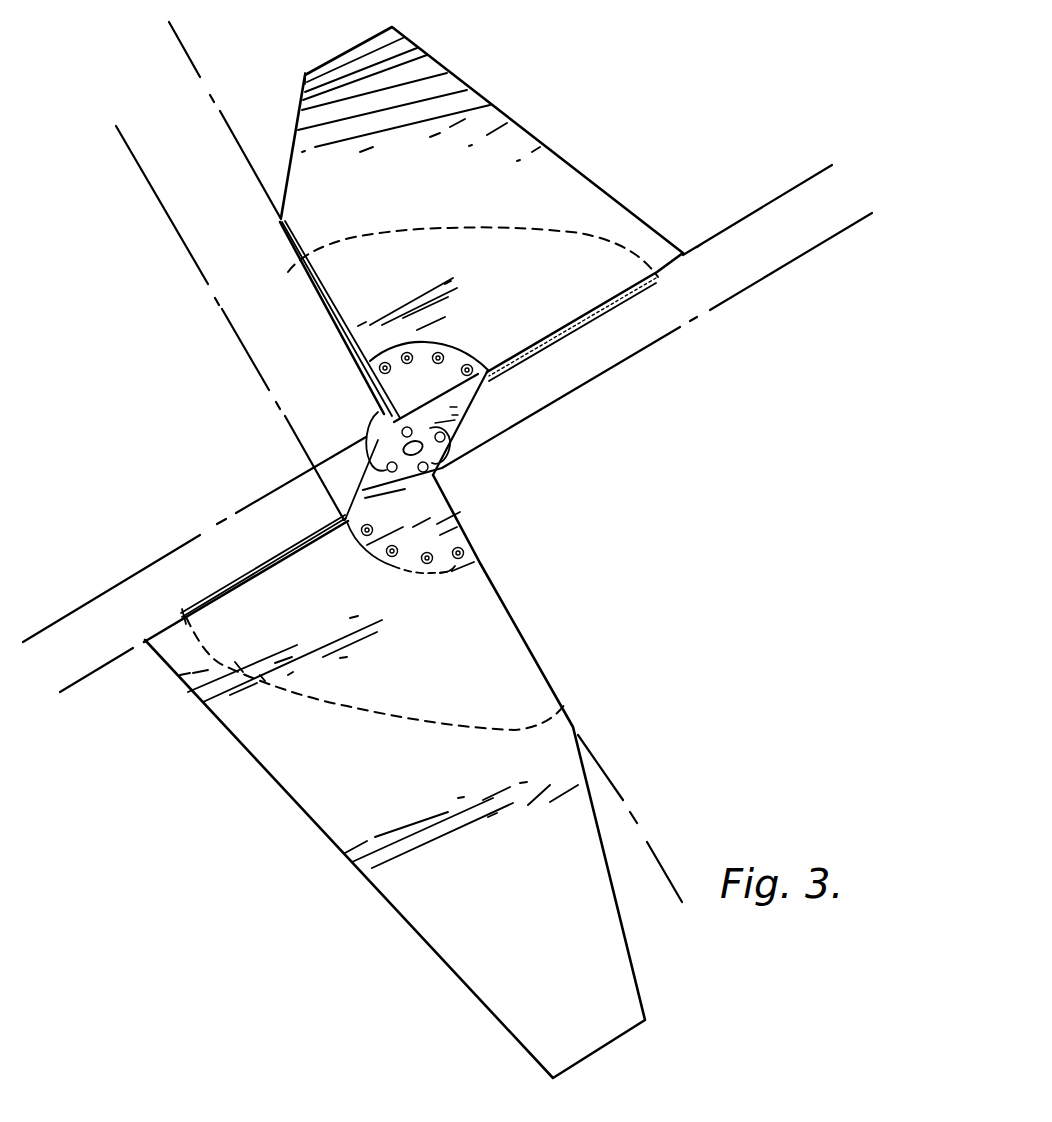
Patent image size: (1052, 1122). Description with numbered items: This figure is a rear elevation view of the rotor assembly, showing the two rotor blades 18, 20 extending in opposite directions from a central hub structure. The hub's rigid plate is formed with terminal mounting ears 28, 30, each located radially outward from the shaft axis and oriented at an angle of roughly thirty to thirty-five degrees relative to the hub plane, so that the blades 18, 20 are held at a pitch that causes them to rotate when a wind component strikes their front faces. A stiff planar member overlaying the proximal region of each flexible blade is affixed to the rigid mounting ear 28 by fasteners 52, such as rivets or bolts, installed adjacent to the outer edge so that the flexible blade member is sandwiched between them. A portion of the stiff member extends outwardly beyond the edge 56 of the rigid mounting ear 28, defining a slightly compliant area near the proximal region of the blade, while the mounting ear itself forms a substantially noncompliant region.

The rotor blade 18 is at (498, 100).
The rotor blade 20 is at (554, 669).
The terminal mounting ear 28 is at (433, 380).
The terminal mounting ear 30 is at (433, 493).
The fastener 52 is at (463, 552).
The edge of rigid mounting ear 56 is at (455, 566).